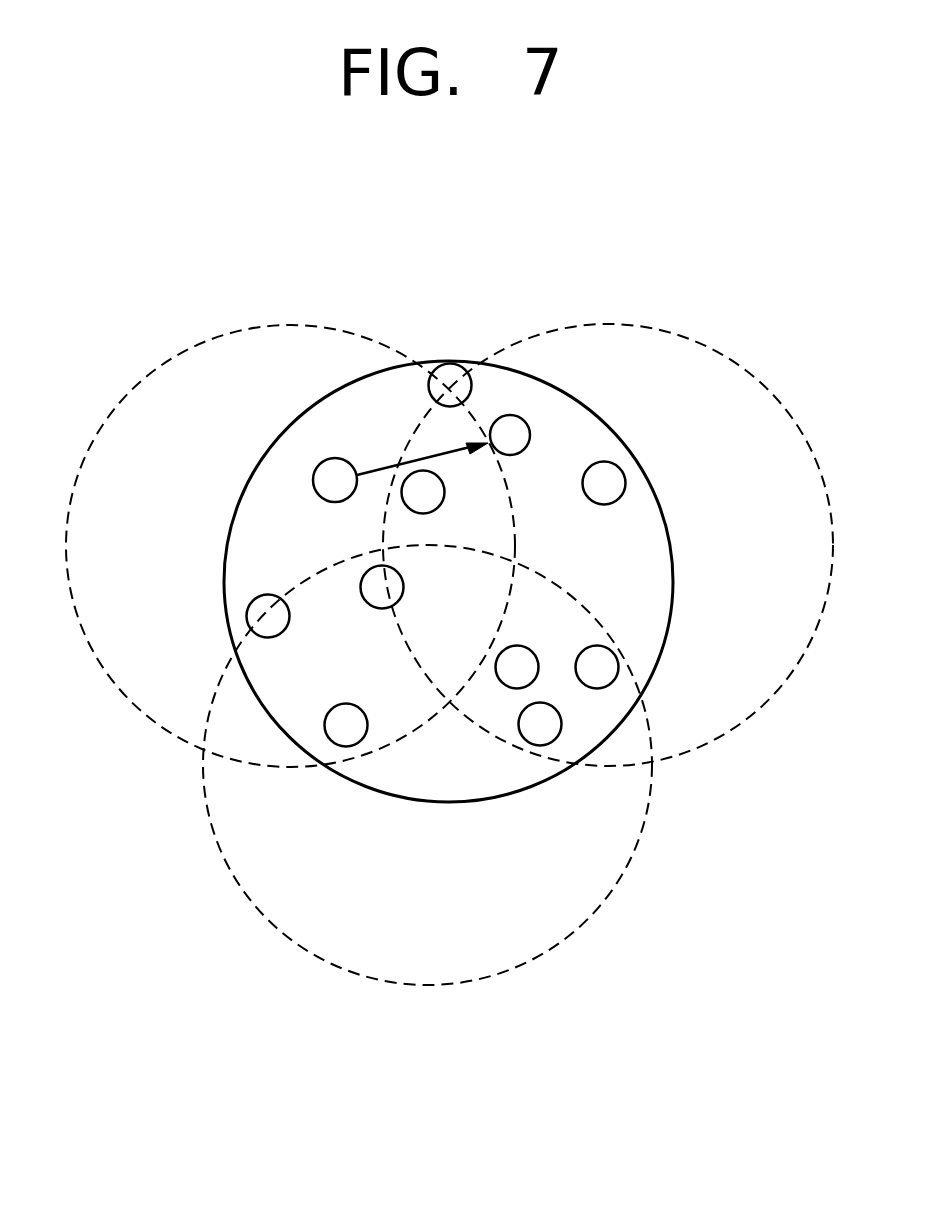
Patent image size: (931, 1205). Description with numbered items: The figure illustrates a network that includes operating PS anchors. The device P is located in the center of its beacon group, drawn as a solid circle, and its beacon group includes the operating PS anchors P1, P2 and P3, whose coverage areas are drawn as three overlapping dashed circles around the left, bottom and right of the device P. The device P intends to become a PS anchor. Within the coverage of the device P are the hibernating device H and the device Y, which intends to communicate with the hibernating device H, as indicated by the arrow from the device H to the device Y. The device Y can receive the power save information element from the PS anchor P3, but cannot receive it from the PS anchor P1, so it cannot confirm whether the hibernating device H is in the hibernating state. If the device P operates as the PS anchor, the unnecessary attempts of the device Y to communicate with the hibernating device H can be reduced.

The device P is at (448, 581).
The operating PS anchor P1 is at (290, 546).
The operating PS anchor P2 is at (427, 765).
The operating PS anchor P3 is at (608, 545).
The hibernating device H is at (400, 472).
The device Y is at (510, 435).